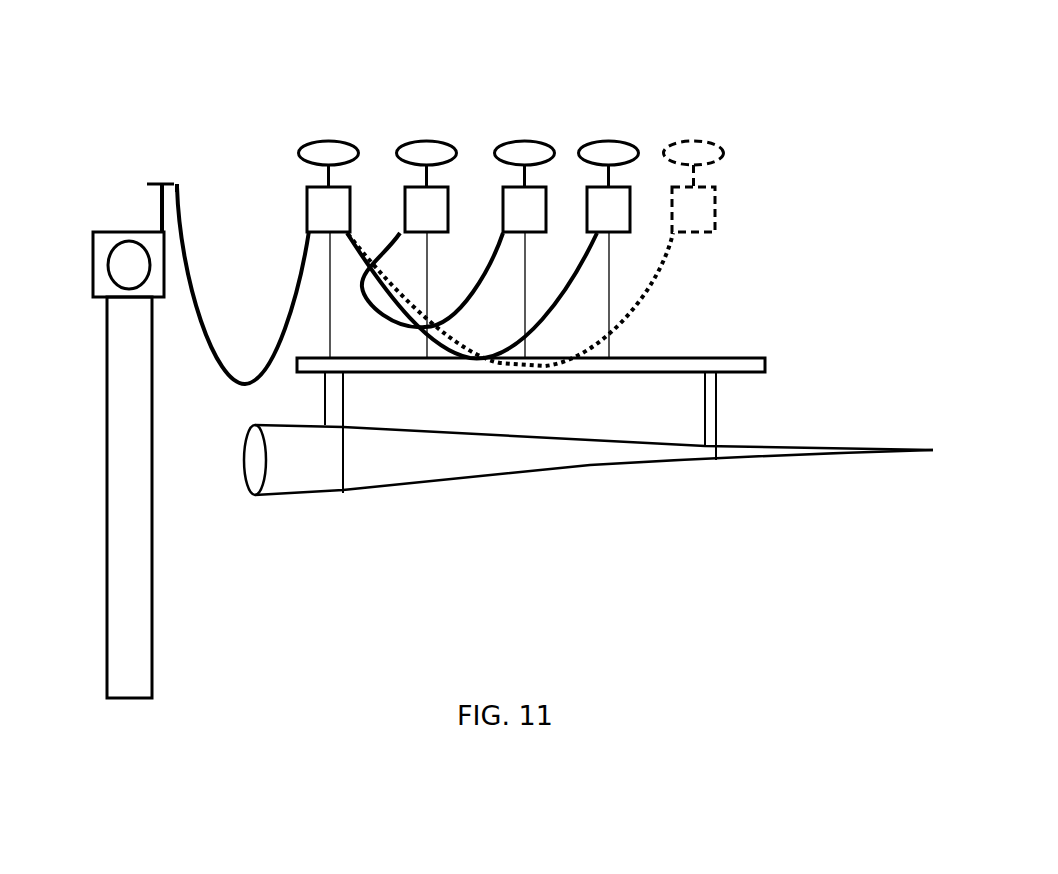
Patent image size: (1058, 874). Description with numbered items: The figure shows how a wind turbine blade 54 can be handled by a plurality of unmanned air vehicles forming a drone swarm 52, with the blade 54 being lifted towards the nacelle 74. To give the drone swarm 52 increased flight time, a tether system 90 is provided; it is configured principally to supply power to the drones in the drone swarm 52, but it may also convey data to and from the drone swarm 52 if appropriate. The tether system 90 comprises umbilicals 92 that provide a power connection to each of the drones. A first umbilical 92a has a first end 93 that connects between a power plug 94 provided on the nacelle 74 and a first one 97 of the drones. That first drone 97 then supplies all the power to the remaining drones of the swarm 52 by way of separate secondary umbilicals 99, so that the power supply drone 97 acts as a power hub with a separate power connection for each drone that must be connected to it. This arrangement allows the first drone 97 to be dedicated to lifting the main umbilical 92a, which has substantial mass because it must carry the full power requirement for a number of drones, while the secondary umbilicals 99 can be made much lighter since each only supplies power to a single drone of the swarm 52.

The tether system 90 is at (249, 90).
The drone swarm 52 is at (780, 121).
The wind turbine blade 54 is at (825, 462).
The nacelle 74 is at (93, 273).
The umbilicals 92 is at (232, 395).
The first umbilical 92a is at (195, 287).
The first end 93 is at (177, 184).
The power plug 94 is at (160, 210).
The first one of the drones 97 is at (306, 195).
The secondary umbilicals 99 is at (372, 285).